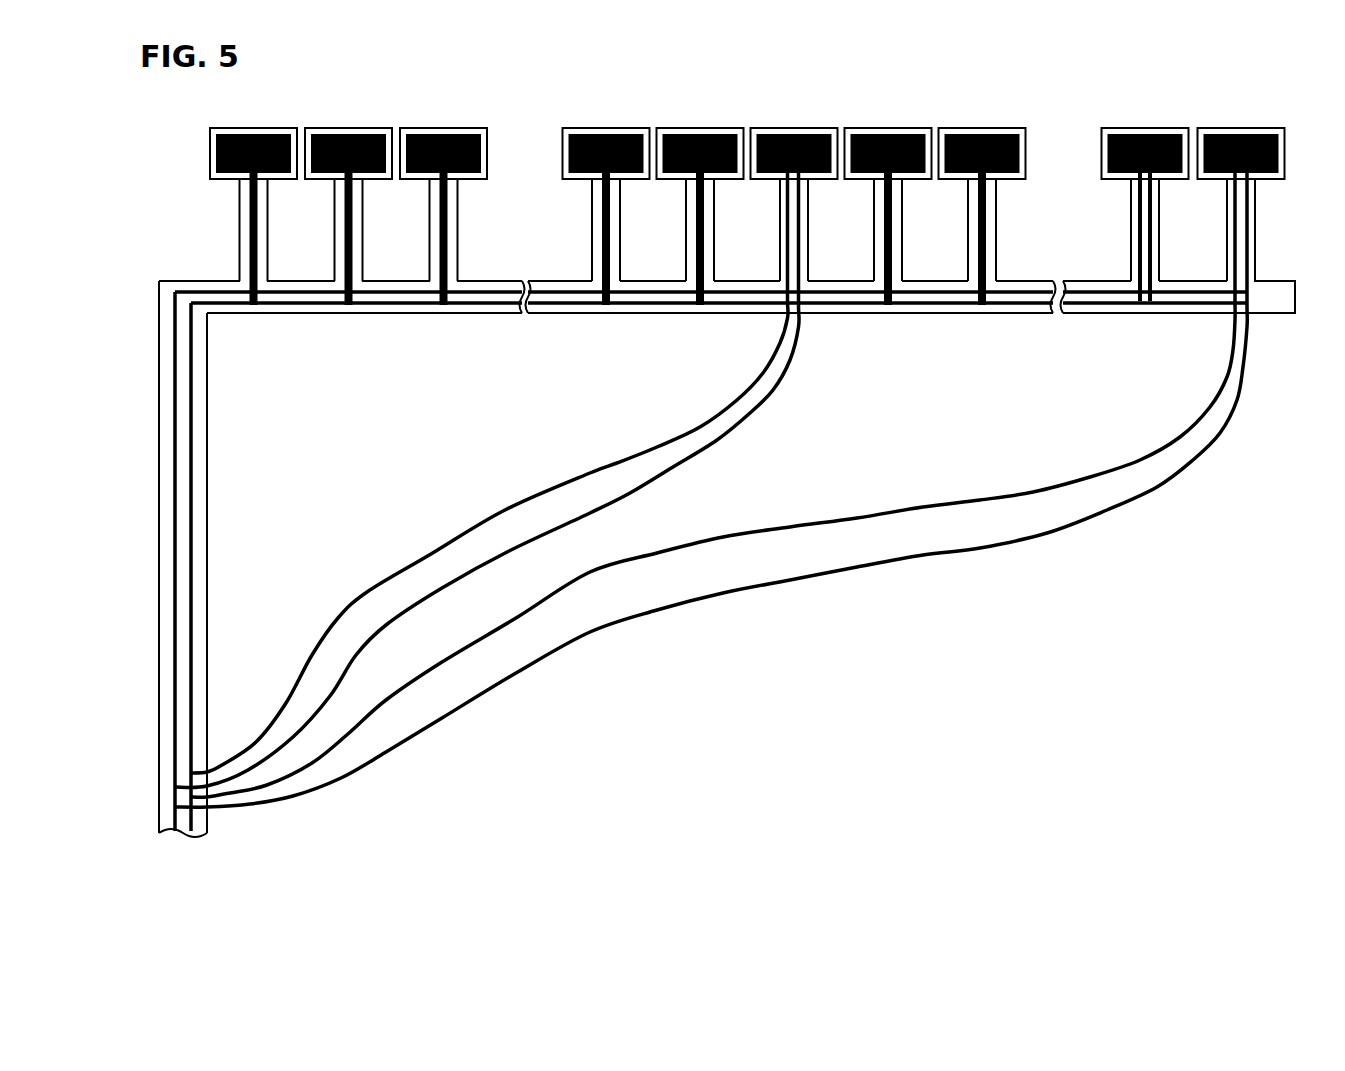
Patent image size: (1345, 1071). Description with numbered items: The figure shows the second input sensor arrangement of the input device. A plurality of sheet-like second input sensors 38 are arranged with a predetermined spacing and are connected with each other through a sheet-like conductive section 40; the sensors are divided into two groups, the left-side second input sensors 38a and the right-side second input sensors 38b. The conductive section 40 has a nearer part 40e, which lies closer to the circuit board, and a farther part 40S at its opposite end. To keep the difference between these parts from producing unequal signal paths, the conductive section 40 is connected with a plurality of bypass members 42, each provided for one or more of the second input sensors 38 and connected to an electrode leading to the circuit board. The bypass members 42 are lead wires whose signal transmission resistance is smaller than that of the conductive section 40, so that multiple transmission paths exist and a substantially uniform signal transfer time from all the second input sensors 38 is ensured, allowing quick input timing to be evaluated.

The second input sensor 38 is at (443, 137).
The left-side second input sensor 38a is at (747, 180).
The right-side second input sensor 38b is at (747, 183).
The conductive section 40 is at (645, 328).
The nearer part 40e is at (192, 272).
The farther part 40S is at (1260, 333).
The bypass member 42 is at (510, 545).